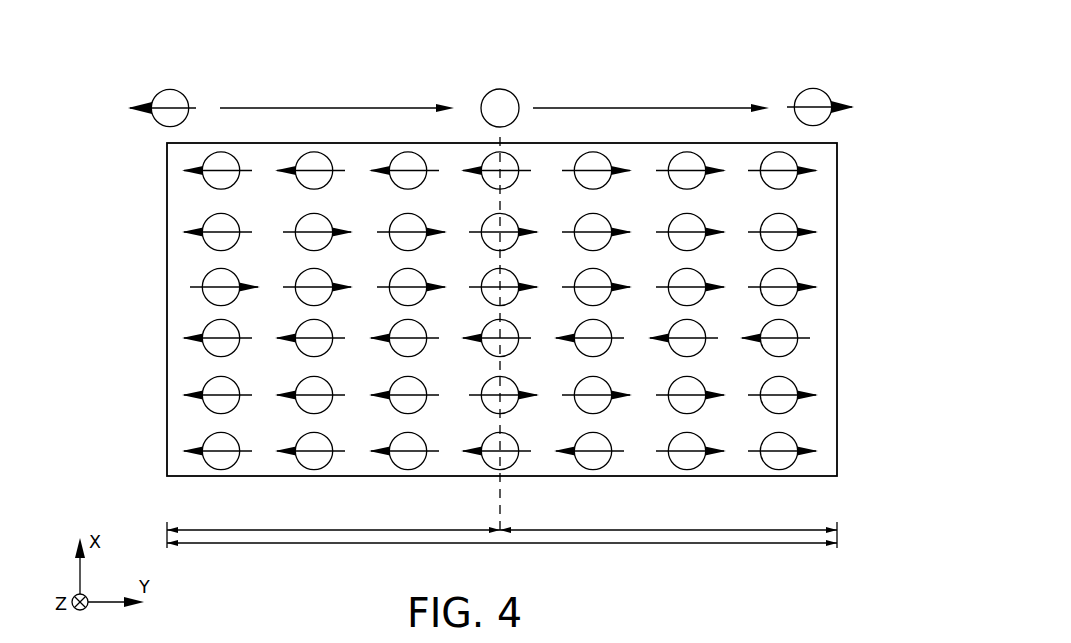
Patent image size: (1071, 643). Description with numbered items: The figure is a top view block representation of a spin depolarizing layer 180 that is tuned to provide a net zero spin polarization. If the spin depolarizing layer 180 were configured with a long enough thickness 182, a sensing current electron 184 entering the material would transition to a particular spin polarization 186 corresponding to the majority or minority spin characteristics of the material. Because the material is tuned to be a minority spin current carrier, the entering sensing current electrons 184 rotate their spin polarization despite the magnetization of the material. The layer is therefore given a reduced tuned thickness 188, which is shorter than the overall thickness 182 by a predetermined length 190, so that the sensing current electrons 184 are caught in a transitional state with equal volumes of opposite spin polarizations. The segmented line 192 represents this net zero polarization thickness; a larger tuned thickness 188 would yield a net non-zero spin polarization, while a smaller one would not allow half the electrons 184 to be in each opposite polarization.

The spin depolarizing layer 180 is at (158, 60).
The thickness 182 is at (502, 553).
The sensing current electron 184 is at (222, 470).
The spin polarization 186 is at (802, 91).
The tuned thickness 188 is at (333, 522).
The predetermined length 190 is at (668, 522).
The segmented line 192 is at (500, 532).